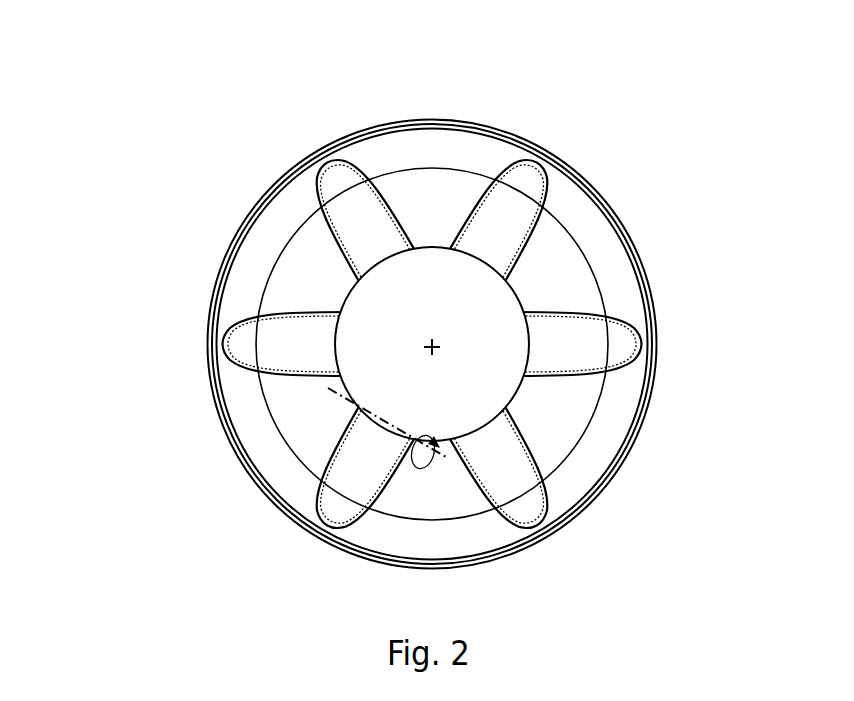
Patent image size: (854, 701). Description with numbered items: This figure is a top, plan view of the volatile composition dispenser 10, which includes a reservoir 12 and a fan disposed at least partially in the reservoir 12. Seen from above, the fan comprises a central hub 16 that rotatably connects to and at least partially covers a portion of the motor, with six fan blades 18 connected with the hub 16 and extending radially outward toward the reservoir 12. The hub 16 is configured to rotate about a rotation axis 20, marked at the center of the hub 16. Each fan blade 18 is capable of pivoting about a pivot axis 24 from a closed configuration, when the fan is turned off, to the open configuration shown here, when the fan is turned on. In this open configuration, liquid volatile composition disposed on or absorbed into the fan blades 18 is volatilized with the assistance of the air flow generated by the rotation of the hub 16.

The volatile composition dispenser 10 is at (168, 210).
The reservoir 12 is at (602, 233).
The hub 16 is at (443, 396).
The fan blades 18 is at (340, 180).
The rotation axis 20 is at (438, 345).
The pivot axis 24 is at (350, 400).